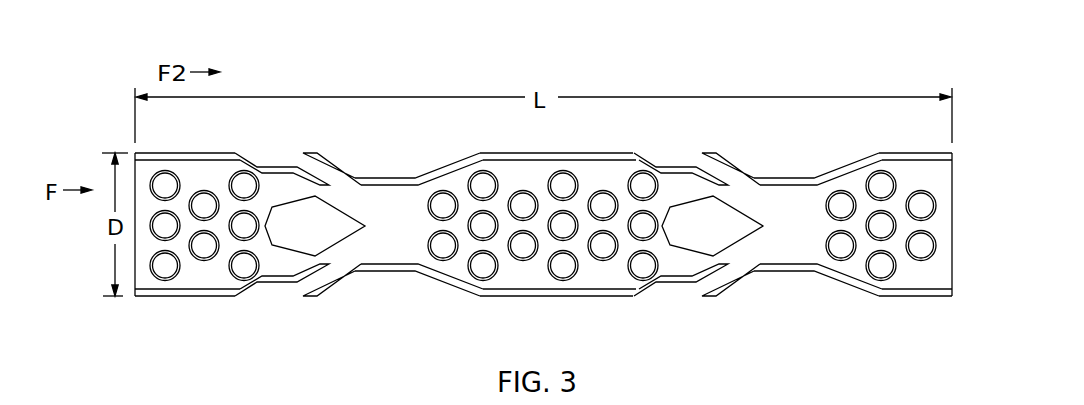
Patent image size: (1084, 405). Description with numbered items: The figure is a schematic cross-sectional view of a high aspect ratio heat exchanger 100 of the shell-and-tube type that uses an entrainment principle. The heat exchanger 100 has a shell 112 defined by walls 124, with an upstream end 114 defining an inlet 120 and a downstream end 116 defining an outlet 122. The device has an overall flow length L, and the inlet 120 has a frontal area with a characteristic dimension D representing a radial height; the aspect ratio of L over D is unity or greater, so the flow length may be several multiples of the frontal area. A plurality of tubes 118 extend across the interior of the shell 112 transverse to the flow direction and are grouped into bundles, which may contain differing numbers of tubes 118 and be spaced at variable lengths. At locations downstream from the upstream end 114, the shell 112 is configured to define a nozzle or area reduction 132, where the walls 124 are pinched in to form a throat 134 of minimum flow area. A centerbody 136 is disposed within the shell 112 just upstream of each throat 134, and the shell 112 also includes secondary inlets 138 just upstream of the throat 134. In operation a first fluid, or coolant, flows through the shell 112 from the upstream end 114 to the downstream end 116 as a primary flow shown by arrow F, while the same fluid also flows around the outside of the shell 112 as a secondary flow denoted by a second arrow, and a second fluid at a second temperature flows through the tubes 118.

The heat exchanger 100 is at (527, 194).
The shell 112 is at (527, 242).
The upstream end 114 is at (150, 311).
The downstream end 116 is at (931, 317).
The tubes 118 is at (430, 253).
The inlet 120 is at (134, 298).
The outlet 122 is at (950, 154).
The walls 124 is at (547, 158).
The area reduction 132 is at (335, 168).
The throat 134 is at (397, 179).
The centerbody 136 is at (331, 236).
The secondary inlets 138 is at (273, 170).